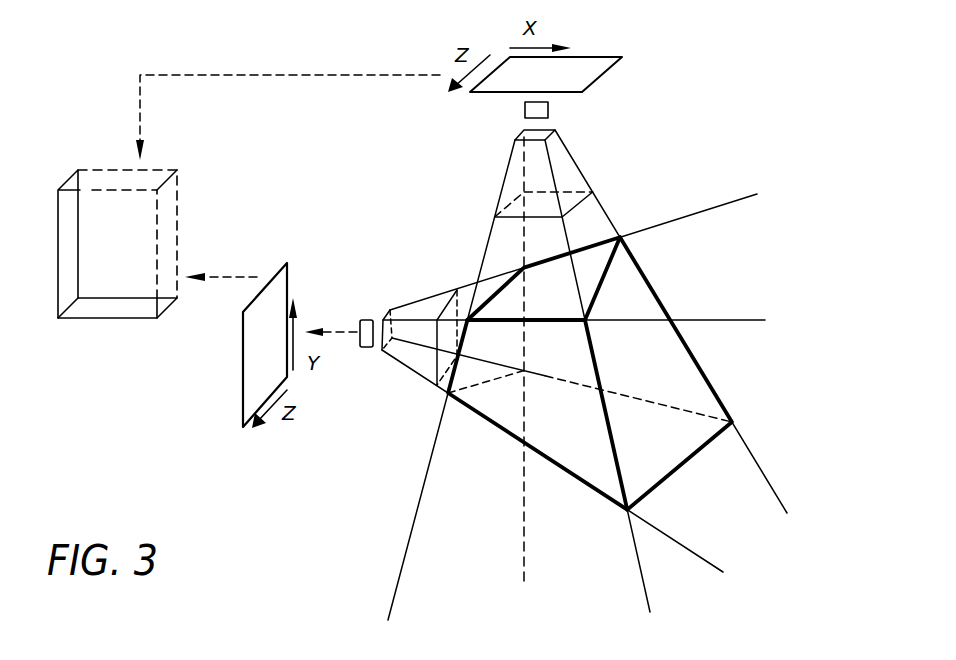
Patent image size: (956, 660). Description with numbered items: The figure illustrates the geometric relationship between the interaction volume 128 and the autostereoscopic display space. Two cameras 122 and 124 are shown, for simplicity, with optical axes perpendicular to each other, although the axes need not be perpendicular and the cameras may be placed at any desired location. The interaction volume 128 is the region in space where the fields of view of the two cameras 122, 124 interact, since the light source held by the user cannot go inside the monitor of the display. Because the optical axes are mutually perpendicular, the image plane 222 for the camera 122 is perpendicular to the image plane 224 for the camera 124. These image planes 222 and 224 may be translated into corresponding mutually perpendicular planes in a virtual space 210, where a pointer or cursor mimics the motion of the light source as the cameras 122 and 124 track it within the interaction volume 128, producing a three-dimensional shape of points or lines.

The image plane 222 is at (590, 65).
The camera 122 is at (548, 110).
The camera 124 is at (367, 347).
The interaction volume 128 is at (682, 466).
The virtual space 210 is at (110, 277).
The image plane 224 is at (243, 370).